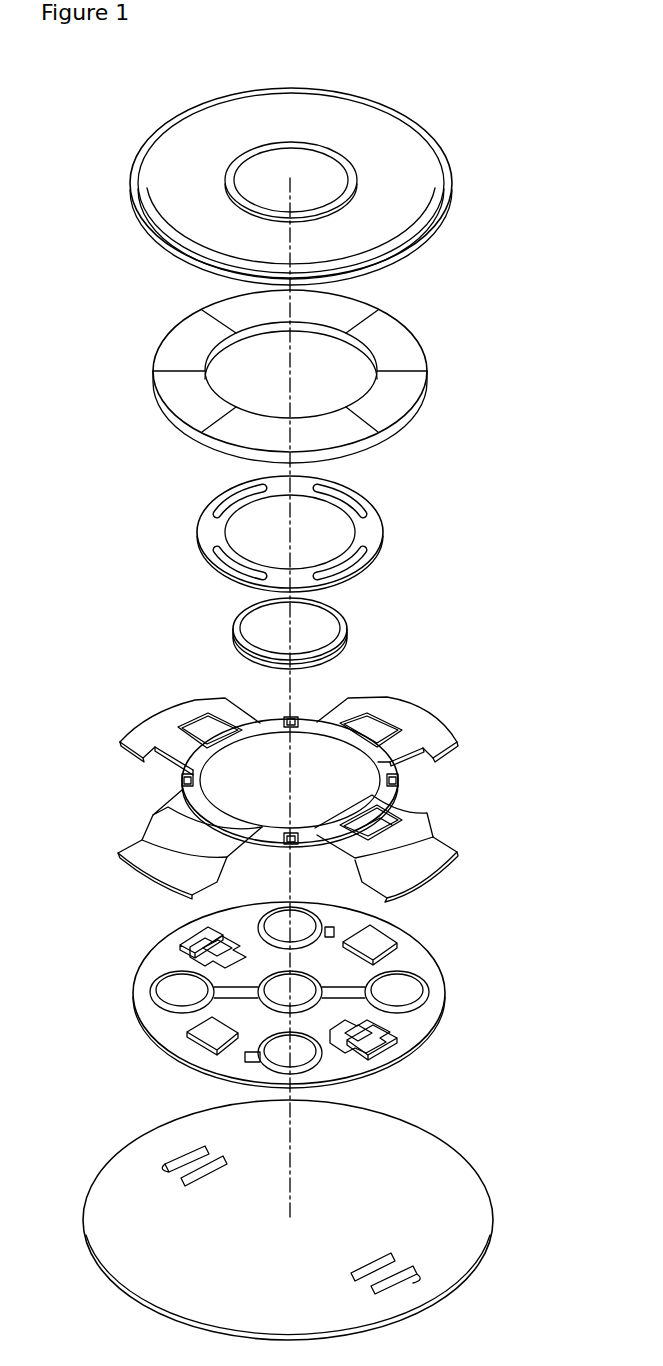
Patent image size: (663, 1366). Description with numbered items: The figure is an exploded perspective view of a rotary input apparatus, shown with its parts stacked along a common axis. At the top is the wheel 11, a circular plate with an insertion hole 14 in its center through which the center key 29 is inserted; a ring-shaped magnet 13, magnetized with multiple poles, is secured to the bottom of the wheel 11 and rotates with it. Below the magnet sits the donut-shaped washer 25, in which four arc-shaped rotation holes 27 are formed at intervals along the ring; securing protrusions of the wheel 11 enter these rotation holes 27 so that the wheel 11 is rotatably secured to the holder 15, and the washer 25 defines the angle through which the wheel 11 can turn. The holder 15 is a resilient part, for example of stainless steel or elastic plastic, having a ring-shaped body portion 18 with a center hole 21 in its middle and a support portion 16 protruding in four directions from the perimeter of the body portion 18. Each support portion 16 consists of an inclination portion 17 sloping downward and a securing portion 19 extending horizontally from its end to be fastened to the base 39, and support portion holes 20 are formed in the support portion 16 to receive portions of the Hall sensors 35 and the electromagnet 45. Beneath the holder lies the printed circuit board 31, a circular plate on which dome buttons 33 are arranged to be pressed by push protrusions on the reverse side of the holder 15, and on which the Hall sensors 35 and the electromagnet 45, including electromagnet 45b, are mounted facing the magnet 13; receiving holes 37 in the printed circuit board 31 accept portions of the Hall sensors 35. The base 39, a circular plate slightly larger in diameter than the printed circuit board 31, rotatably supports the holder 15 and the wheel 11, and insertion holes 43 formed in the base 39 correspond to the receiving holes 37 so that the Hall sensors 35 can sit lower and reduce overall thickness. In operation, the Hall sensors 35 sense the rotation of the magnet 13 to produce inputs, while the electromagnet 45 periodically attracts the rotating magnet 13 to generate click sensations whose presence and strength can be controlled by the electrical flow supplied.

The wheel 11 is at (347, 110).
The insertion hole 14 is at (283, 160).
The magnet 13 is at (423, 357).
The washer 25 is at (316, 531).
The rotation holes 27 is at (352, 503).
The center key 29 is at (322, 617).
The holder 15 is at (295, 767).
The center hole 21 is at (302, 750).
The body portion 18 is at (182, 775).
The support portion 16 is at (168, 812).
The inclination portion 17 is at (425, 833).
The securing portion 19 is at (443, 857).
The support portion holes 20 is at (383, 828).
The printed circuit board 31 is at (306, 995).
The dome buttons 33 is at (168, 985).
The Hall sensors 35 is at (198, 937).
The receiving holes 37 is at (210, 957).
The electromagnet 45 is at (378, 942).
The electromagnet 45b is at (193, 1038).
The base 39 is at (296, 1220).
The insertion holes 43 is at (160, 1165).